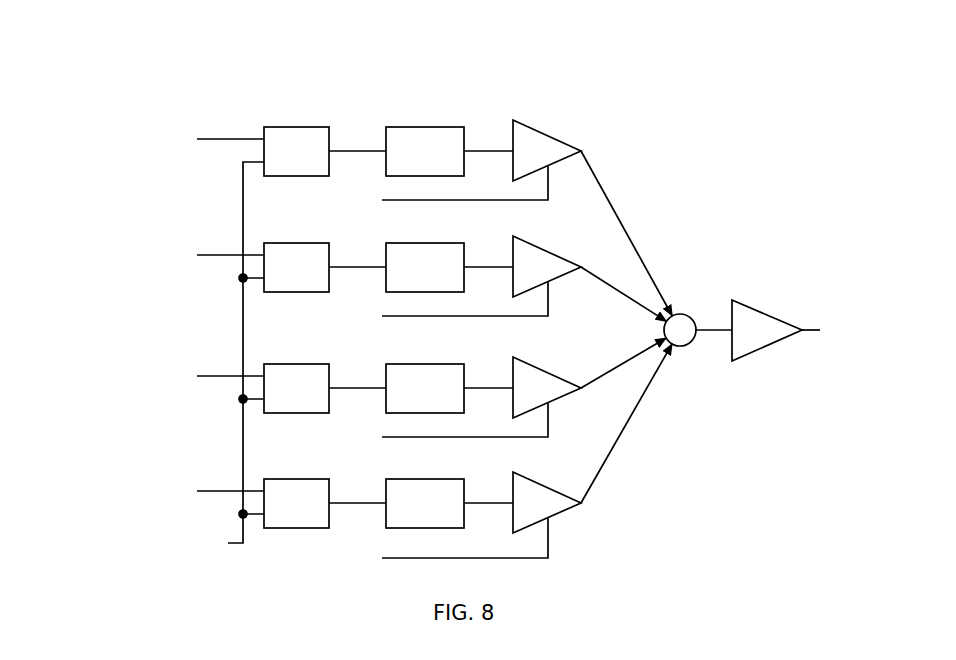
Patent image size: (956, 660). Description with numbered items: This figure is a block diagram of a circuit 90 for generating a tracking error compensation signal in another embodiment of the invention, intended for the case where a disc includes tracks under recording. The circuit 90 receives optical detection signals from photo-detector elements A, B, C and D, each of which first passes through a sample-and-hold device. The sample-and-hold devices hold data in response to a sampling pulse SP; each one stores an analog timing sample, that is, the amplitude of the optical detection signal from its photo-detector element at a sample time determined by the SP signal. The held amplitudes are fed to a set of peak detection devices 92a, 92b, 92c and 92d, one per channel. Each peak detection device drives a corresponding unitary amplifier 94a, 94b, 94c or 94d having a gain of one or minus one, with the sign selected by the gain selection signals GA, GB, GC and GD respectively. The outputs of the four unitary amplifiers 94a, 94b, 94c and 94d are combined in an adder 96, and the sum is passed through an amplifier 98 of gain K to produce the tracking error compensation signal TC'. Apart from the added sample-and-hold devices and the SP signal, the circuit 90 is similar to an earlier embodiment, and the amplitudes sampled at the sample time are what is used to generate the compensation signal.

The circuit 90 is at (119, 119).
The peak detection device 92a is at (440, 127).
The peak detection device 92b is at (440, 243).
The peak detection device 92c is at (440, 364).
The peak detection device 92d is at (440, 479).
The unitary amplifier 94a is at (553, 138).
The unitary amplifier 94b is at (553, 254).
The unitary amplifier 94c is at (553, 375).
The unitary amplifier 94d is at (553, 490).
The adder 96 is at (685, 346).
The amplifier 98 is at (775, 343).